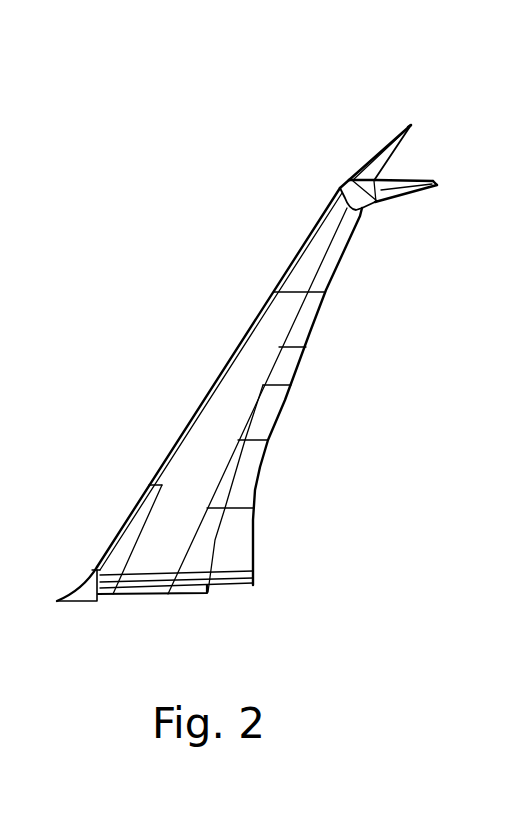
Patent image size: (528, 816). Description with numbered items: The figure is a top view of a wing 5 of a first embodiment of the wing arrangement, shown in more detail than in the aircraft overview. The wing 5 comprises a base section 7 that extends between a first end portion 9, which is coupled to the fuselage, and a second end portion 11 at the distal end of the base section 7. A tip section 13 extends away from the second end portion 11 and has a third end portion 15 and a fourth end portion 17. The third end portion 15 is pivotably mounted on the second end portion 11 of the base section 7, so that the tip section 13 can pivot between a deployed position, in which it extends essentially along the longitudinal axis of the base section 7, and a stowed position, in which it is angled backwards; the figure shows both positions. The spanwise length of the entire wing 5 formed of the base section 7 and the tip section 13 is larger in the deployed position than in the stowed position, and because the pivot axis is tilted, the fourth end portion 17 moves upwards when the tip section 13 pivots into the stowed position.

The wing 5 is at (300, 157).
The base section 7 is at (212, 386).
The first end portion 9 is at (147, 597).
The second end portion 11 is at (320, 213).
The tip section 13 is at (387, 148).
The third end portion 15 is at (362, 208).
The fourth end portion 17 is at (410, 124).